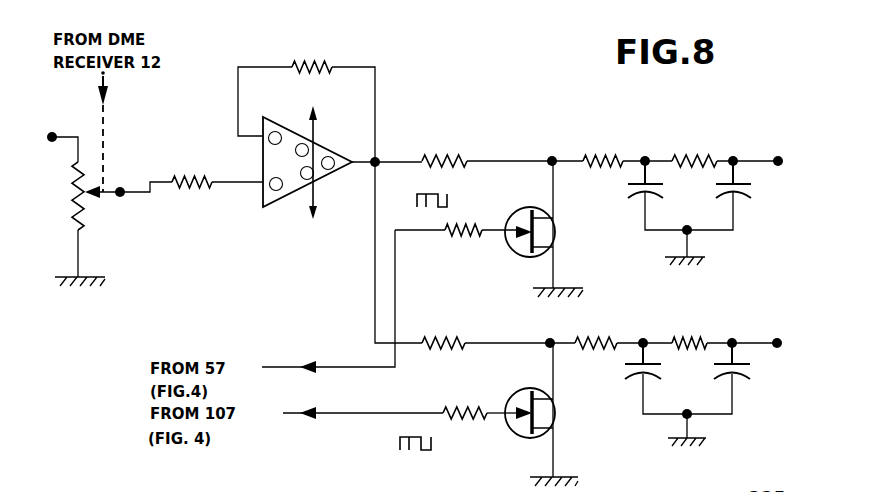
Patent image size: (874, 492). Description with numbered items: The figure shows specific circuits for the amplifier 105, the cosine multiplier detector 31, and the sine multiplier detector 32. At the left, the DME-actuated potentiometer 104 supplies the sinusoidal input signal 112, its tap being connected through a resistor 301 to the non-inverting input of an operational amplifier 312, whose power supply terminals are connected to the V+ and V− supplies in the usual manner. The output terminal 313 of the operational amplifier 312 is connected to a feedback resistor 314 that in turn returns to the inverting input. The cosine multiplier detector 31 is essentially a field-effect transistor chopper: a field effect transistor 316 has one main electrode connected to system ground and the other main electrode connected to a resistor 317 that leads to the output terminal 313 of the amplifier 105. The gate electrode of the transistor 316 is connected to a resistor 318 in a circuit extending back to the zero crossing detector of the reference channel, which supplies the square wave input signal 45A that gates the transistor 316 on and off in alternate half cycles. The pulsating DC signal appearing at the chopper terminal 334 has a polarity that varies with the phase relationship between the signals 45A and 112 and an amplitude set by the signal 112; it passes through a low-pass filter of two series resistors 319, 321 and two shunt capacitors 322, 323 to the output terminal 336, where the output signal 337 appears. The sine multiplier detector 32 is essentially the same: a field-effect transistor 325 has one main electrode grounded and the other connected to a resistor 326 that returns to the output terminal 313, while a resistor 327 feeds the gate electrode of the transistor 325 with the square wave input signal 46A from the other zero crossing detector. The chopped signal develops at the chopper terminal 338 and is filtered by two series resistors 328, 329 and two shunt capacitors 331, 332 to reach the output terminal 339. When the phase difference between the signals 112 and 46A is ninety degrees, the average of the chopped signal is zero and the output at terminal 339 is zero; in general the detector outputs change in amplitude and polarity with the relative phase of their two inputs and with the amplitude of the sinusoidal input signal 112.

The sinusoidal input signal 112 is at (34, 110).
The DME-actuated potentiometer 104 is at (70, 204).
The amplifier 105 is at (216, 145).
The resistor 301 is at (198, 190).
The operational amplifier 312 is at (276, 208).
The feedback resistor 314 is at (320, 58).
The output terminal 313 is at (380, 158).
The resistor 317 is at (443, 152).
The chopper terminal 334 is at (550, 156).
The cosine multiplier detector 31 is at (695, 177).
The series resistor 319 is at (612, 155).
The series resistor 321 is at (697, 152).
The shunt capacitor 322 is at (632, 196).
The shunt capacitor 323 is at (748, 194).
The output terminal 336 is at (780, 156).
The square wave input signal 45A is at (445, 192).
The resistor 318 is at (458, 240).
The field effect transistor 316 is at (518, 256).
The resistor 326 is at (452, 316).
The chopper terminal 338 is at (548, 338).
The resistor 327 is at (470, 404).
The field-effect transistor 325 is at (522, 436).
The square wave input signal 46A is at (398, 448).
The sine multiplier detector 32 is at (696, 388).
The series resistor 328 is at (590, 335).
The series resistor 329 is at (690, 337).
The shunt capacitor 331 is at (628, 374).
The shunt capacitor 332 is at (748, 372).
The output terminal 339 is at (779, 338).
The output signal 337 is at (856, 486).